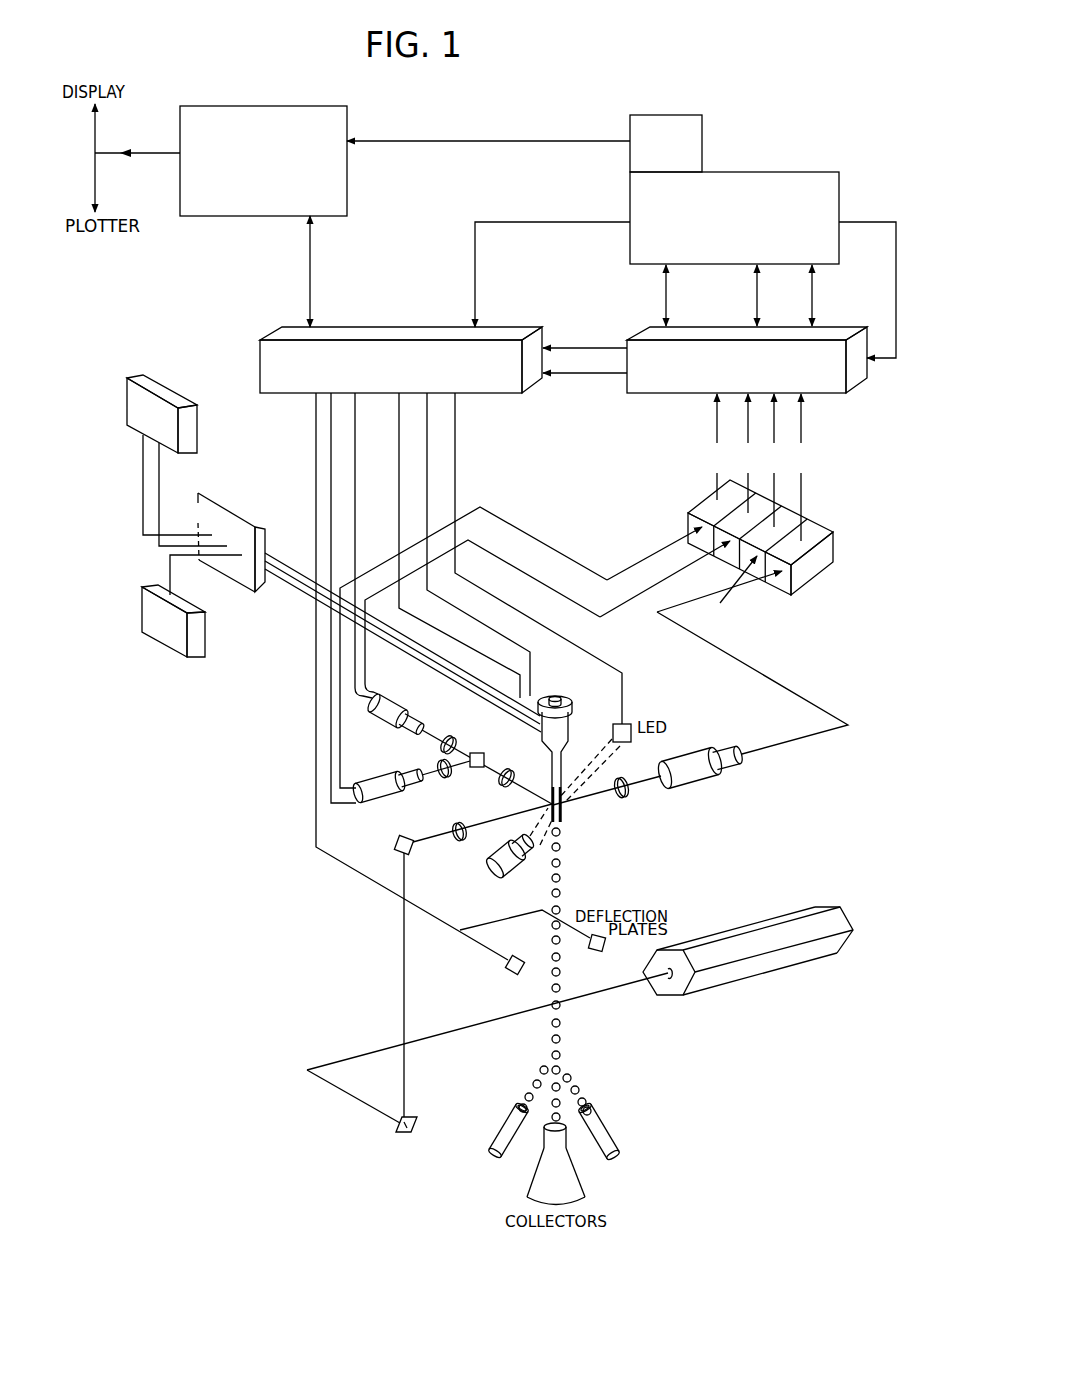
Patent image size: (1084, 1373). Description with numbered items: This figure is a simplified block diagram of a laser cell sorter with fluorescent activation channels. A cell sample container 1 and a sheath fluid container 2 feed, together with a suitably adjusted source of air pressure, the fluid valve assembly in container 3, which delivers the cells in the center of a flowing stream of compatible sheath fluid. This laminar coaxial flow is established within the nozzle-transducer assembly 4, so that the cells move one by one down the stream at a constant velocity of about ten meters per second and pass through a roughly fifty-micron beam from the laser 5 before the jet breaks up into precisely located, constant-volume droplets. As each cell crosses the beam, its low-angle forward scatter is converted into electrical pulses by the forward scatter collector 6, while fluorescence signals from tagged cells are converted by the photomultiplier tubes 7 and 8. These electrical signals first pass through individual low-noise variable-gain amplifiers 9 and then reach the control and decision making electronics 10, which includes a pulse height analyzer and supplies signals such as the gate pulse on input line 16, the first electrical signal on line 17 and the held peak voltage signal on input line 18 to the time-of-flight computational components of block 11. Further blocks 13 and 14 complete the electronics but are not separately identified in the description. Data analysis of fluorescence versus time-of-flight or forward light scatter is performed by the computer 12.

The cell sample container 1 is at (125, 372).
The sheath fluid container 2 is at (232, 503).
The fluid valve assembly container 3 is at (160, 647).
The nozzle-transducer assembly 4 is at (569, 696).
The laser 5 is at (782, 913).
The forward scatter collector 6 is at (722, 769).
The photomultiplier tube 7 is at (377, 720).
The photomultiplier tube 8 is at (370, 807).
The variable-gain amplifiers 9 is at (822, 529).
The control and decision making electronics 10 is at (820, 402).
The time-of-flight computational components block 11 is at (487, 400).
The computer 12 is at (233, 218).
The time of flight unit 13 is at (841, 190).
The analog to digital converter ADC 14 is at (703, 118).
The gate pulse input line 16 is at (679, 297).
The first signal input line 17 is at (767, 297).
The held peak voltage input line 18 is at (813, 306).